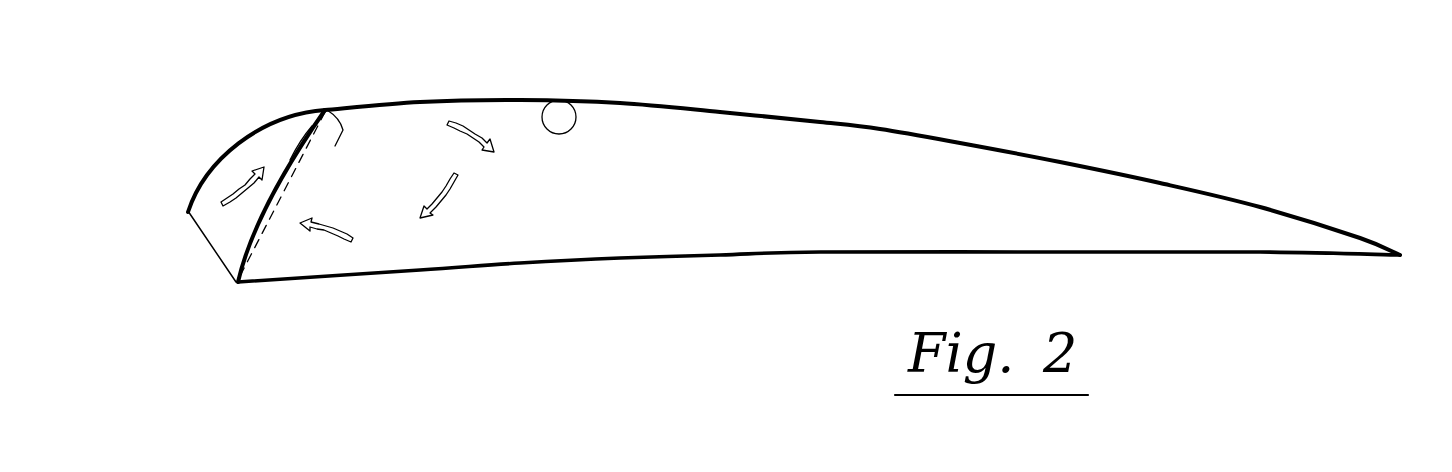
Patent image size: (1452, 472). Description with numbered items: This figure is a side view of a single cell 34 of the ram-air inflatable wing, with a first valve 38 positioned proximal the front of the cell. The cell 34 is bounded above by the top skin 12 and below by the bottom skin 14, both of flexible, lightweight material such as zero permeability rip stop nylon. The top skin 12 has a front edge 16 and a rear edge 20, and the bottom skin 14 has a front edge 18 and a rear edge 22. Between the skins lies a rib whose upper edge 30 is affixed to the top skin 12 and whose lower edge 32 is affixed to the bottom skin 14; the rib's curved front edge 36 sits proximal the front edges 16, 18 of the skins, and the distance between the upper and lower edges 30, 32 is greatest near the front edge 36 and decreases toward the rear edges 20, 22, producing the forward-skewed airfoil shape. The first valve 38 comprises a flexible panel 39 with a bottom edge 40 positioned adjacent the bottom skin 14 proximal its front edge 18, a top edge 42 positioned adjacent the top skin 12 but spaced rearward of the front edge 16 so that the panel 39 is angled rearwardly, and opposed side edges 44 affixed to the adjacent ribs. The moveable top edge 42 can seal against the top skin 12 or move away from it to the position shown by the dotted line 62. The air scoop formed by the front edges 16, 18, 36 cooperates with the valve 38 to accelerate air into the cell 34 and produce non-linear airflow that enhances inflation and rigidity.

The top skin 12 is at (827, 122).
The bottom skin 14 is at (738, 257).
The front edge of the top skin 16 is at (189, 208).
The front edge of the bottom skin 18 is at (242, 285).
The rear edge of the top skin 20 is at (1363, 245).
The rear edge of the bottom skin 22 is at (1357, 258).
The upper edge 30 is at (546, 102).
The lower edge 32 is at (508, 263).
The cell 34 is at (236, 305).
The front edge 36 is at (206, 196).
The first valve 38 is at (282, 170).
The panel 39 is at (297, 148).
The bottom edge 40 is at (233, 278).
The top edge 42 is at (329, 111).
The side edges 44 is at (262, 200).
The dotted line 62 is at (318, 165).